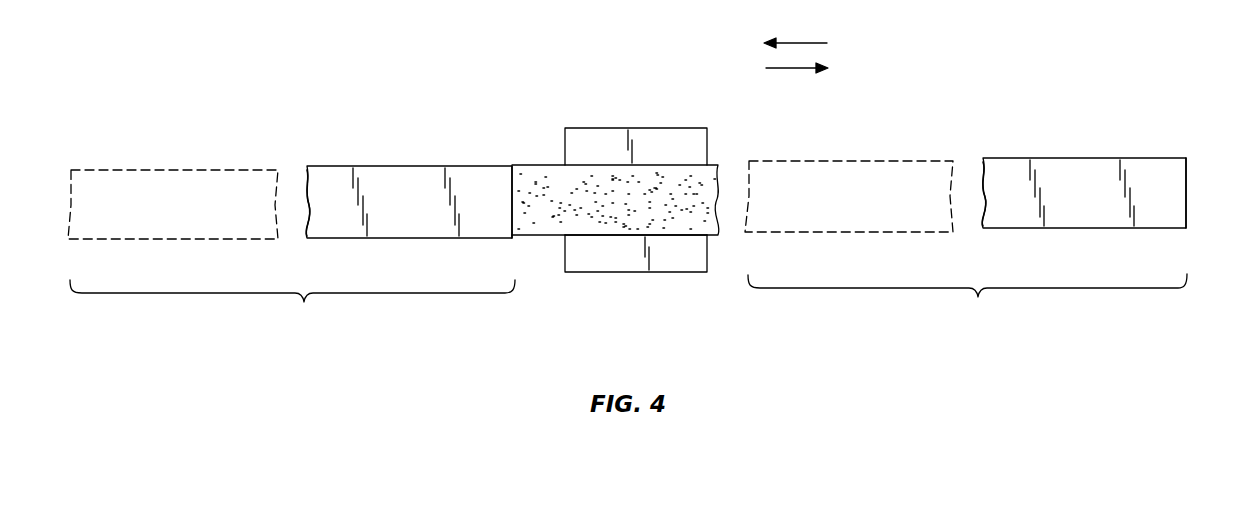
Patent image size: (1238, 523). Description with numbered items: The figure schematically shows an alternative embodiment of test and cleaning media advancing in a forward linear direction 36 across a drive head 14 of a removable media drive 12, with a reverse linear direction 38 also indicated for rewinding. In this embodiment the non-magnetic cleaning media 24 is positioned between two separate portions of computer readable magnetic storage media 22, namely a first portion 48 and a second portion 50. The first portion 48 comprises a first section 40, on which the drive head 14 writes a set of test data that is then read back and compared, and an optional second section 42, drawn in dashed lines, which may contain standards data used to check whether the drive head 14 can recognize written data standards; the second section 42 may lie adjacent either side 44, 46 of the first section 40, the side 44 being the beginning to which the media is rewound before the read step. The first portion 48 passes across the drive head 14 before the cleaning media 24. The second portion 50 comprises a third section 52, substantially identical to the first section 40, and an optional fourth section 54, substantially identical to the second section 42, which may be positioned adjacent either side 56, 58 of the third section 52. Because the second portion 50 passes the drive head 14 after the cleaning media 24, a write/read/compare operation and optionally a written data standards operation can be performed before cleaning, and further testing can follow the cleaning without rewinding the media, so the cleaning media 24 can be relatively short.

The removable media drive 12 is at (606, 108).
The drive head 14 is at (673, 128).
The computer readable magnetic storage media 22 is at (317, 92).
The non-magnetic cleaning media 24 is at (597, 237).
The forward linear direction 36 is at (810, 43).
The reverse linear direction 38 is at (783, 68).
The first section 40 is at (476, 165).
The second section 42 is at (178, 168).
The beginning of the first section 44 is at (307, 173).
The side of the first section 46 is at (513, 178).
The first portion 48 is at (292, 309).
The second portion 50 is at (967, 299).
The third section 52 is at (1086, 158).
The fourth section 54 is at (854, 160).
The side of the third section 56 is at (983, 171).
The side of the third section 58 is at (1186, 172).